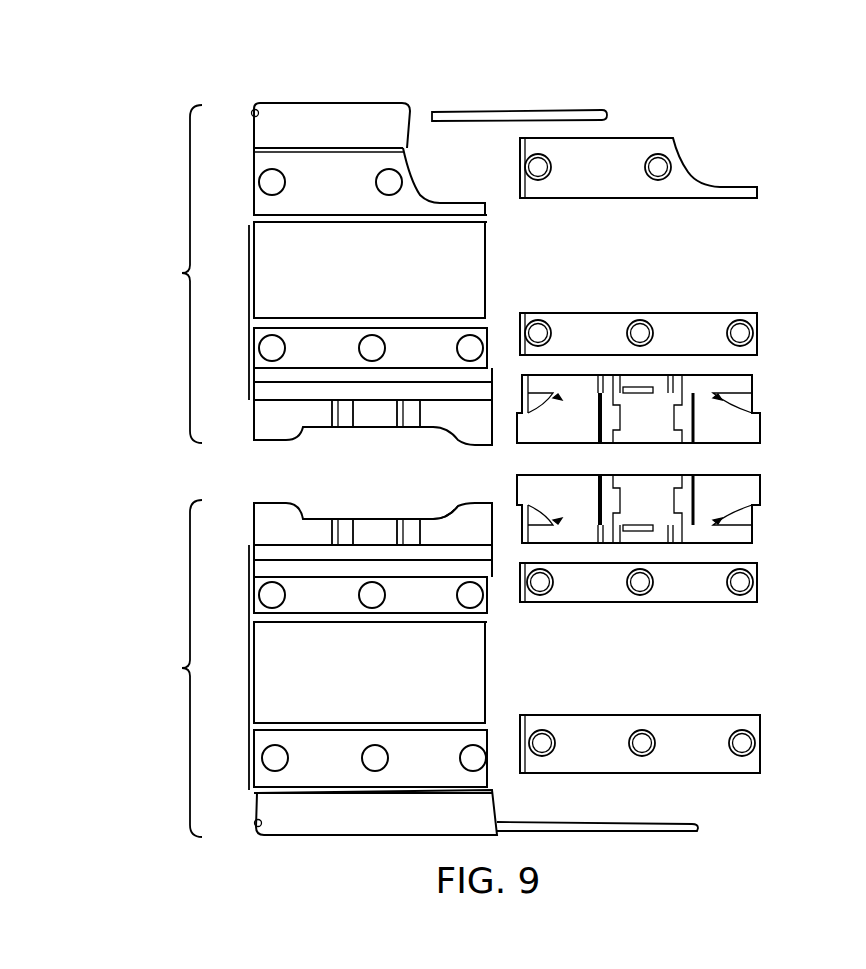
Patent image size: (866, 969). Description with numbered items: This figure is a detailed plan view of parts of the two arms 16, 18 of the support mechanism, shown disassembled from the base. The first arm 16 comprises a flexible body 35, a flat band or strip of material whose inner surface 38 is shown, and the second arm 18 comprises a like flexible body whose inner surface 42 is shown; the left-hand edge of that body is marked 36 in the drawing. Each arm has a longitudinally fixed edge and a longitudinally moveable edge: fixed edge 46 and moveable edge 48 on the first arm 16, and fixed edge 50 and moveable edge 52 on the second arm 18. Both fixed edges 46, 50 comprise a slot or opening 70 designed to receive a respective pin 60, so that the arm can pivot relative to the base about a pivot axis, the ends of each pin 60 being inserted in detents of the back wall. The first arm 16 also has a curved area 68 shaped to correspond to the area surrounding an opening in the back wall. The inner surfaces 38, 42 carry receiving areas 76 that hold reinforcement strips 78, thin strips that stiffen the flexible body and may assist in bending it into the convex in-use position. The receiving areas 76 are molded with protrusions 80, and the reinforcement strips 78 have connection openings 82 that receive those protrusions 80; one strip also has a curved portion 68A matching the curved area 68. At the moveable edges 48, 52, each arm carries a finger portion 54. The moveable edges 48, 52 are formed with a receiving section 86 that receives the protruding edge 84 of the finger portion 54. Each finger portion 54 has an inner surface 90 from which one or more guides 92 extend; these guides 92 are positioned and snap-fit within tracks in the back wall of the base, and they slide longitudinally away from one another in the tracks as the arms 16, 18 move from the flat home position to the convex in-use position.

The first arm 16 is at (176, 274).
The second arm 18 is at (176, 668).
The flexible body 35 is at (249, 275).
The side plate 36 is at (249, 660).
The inner surface 38 is at (357, 286).
The inner surface 42 is at (357, 674).
The longitudinally fixed edge 46 is at (285, 100).
The longitudinally moveable edge 48 is at (360, 432).
The longitudinally fixed edge 50 is at (308, 840).
The longitudinally moveable edge 52 is at (388, 516).
The finger portion 54 is at (760, 440).
The pin 60 is at (548, 108).
The curved area 68 is at (414, 170).
The curved portion 68A is at (702, 177).
The slot or opening 70 is at (249, 115).
The receiving area 76 is at (253, 191).
The reinforcement strip 78 is at (626, 200).
The protrusion 80 is at (284, 183).
The connection opening 82 is at (538, 181).
The protruding edge 84 is at (742, 390).
The receiving section 86 is at (438, 517).
The inner surface 90 is at (652, 480).
The guide 92 is at (608, 430).